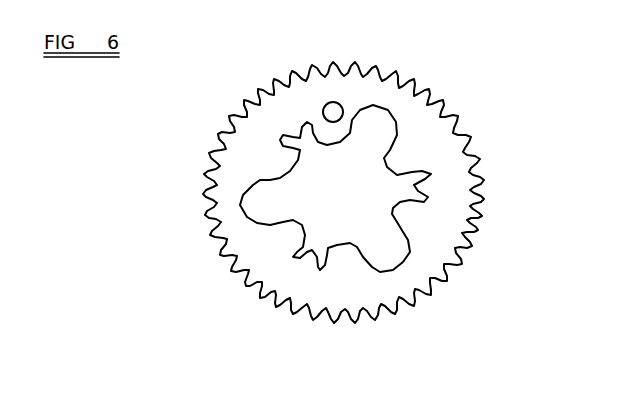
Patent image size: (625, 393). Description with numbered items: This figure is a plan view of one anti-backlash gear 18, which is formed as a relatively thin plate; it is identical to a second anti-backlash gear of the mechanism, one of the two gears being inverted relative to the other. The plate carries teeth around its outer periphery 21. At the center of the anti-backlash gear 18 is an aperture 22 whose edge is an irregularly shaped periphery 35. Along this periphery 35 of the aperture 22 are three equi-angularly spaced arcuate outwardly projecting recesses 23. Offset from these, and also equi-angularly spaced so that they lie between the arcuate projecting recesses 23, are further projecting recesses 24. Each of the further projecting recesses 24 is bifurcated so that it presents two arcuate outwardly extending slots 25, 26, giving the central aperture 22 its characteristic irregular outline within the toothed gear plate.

The anti-backlash gear 18 is at (462, 128).
The outer periphery 21 is at (404, 75).
The aperture 22 is at (340, 188).
The arcuate outwardly projecting recesses 23 is at (253, 183).
The further projecting recesses 24 is at (300, 135).
The arcuate outwardly extending slot 25 is at (293, 257).
The arcuate outwardly extending slot 26 is at (320, 270).
The irregularly shaped periphery 35 is at (406, 246).